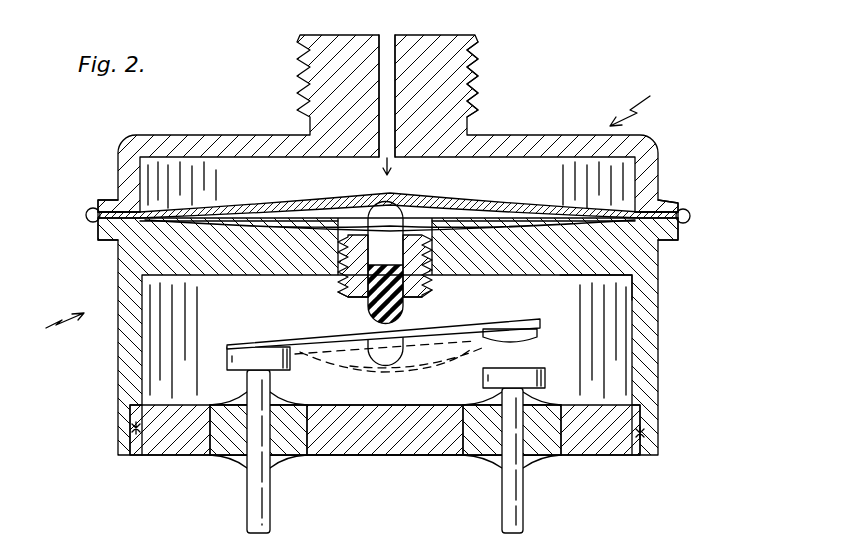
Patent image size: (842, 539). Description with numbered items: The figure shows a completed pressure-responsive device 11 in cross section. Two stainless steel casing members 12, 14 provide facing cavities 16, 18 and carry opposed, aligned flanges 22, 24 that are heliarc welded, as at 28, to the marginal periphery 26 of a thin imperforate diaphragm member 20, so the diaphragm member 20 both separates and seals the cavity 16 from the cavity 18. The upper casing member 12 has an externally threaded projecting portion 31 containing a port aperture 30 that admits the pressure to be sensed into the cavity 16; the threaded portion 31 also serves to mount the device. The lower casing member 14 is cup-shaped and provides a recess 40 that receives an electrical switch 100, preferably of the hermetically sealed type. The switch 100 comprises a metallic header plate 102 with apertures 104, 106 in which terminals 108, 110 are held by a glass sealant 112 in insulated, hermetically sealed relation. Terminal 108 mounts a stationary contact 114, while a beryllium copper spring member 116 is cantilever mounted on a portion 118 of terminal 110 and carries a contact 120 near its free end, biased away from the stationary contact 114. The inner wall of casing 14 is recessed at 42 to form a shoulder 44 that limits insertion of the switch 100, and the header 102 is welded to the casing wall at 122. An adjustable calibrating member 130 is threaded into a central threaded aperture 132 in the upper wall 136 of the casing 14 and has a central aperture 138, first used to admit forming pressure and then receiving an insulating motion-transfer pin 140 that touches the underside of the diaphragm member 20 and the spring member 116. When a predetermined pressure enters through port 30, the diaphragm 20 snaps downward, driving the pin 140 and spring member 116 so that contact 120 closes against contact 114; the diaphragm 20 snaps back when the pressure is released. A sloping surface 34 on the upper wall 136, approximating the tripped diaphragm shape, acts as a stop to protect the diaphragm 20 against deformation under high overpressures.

The pressure-responsive device 11 is at (640, 101).
The casing member 12 is at (238, 140).
The casing member 14 is at (662, 312).
The cavity 16 is at (556, 168).
The cavity 18 is at (258, 224).
The diaphragm member 20 is at (302, 205).
The flange 22 is at (116, 190).
The flange 24 is at (100, 236).
The marginal periphery 26 is at (106, 206).
The heliarc weld 28 is at (86, 216).
The port aperture 30 is at (390, 42).
The externally threaded projecting portion 31 is at (460, 82).
The sloping surface 34 is at (490, 204).
The recess 40 is at (625, 341).
The recess 42 is at (143, 457).
The shoulder 44 is at (128, 408).
The electrical switch 100 is at (45, 337).
The header plate 102 is at (384, 454).
The aperture 104 is at (470, 457).
The aperture 106 is at (216, 457).
The terminal 108 is at (525, 504).
The terminal 110 is at (250, 508).
The glass sealant 112 is at (297, 404).
The stationary contact 114 is at (540, 343).
The spring member 116 is at (470, 330).
The portion of terminal member 118 is at (292, 358).
The electrical contact 120 is at (543, 334).
The weld 122 is at (130, 428).
The adjustable calibrating member 130 is at (342, 286).
The threaded aperture 132 is at (440, 277).
The upper wall 136 is at (578, 283).
The aperture 138 is at (370, 302).
The motion-transfer pin 140 is at (405, 318).